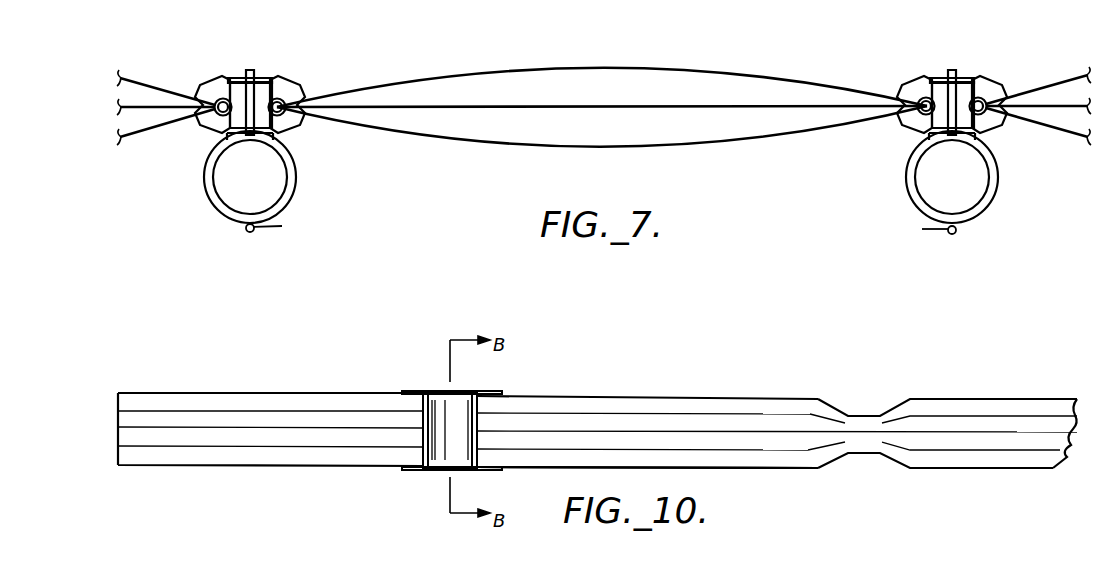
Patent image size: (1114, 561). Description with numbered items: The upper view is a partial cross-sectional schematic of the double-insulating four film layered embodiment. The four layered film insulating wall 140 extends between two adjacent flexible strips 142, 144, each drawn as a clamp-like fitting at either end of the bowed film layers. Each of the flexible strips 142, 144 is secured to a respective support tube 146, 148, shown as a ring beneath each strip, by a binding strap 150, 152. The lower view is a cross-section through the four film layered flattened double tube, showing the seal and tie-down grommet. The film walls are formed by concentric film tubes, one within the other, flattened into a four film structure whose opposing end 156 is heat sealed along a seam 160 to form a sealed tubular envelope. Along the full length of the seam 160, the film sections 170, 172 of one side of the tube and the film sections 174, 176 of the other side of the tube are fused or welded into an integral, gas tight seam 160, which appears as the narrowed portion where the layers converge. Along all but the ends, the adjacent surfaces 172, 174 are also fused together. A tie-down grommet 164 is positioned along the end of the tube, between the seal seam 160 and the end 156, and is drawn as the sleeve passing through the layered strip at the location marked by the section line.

In FIG. 7, the four layered film insulating wall 140 is at (576, 68).
In FIG. 7, the flexible strip 142 is at (327, 46).
In FIG. 7, the flexible strip 144 is at (1028, 63).
In FIG. 7, the support tube 146 is at (287, 201).
In FIG. 7, the support tube 148 is at (990, 192).
In FIG. 7, the binding strap 150 is at (250, 232).
In FIG. 7, the binding strap 152 is at (931, 230).
In FIG. 10, the opposing end 156 is at (128, 393).
In FIG. 10, the seam 160 is at (863, 414).
In FIG. 10, the tie-down grommet 164 is at (495, 392).
In FIG. 10, the film section 170 is at (560, 408).
In FIG. 10, the film section 172 is at (612, 427).
In FIG. 10, the film section 174 is at (667, 445).
In FIG. 10, the film section 176 is at (713, 462).